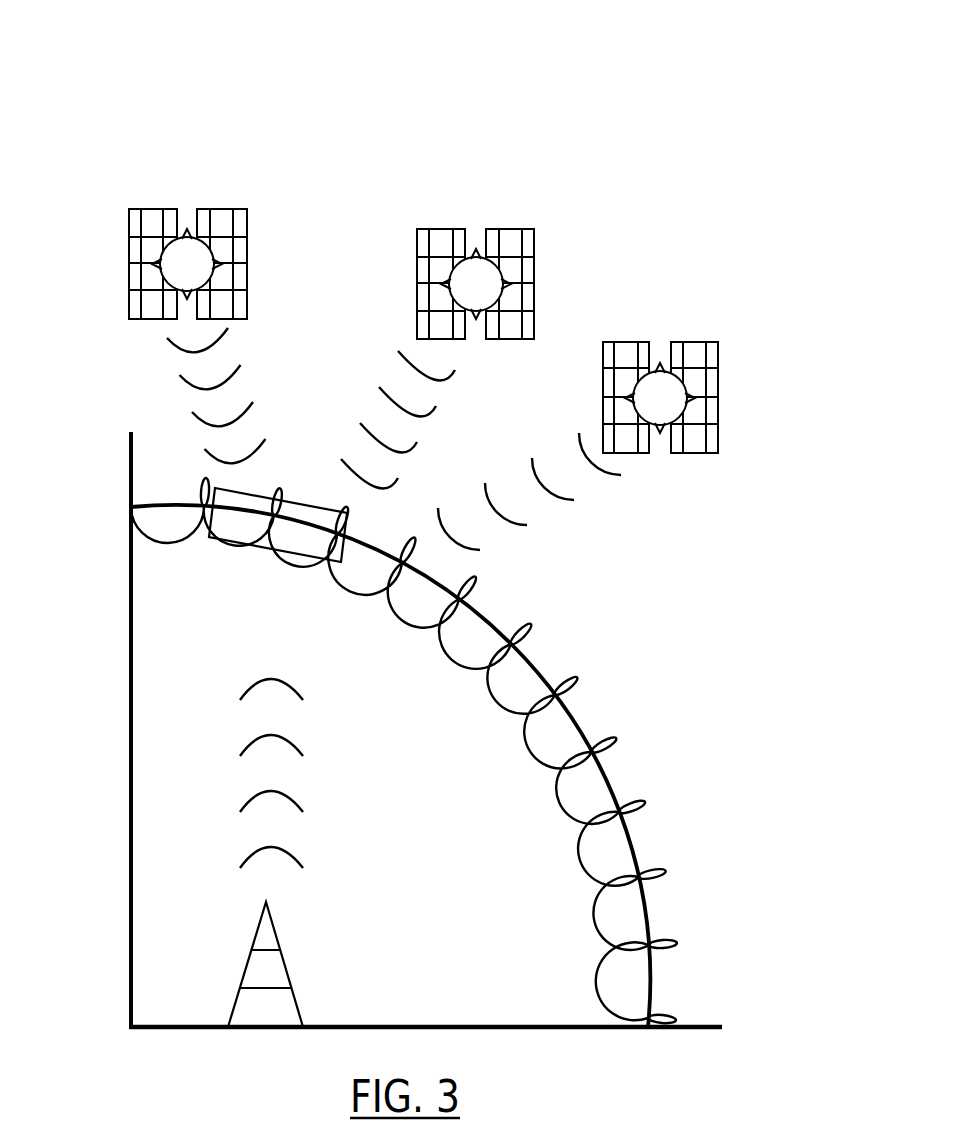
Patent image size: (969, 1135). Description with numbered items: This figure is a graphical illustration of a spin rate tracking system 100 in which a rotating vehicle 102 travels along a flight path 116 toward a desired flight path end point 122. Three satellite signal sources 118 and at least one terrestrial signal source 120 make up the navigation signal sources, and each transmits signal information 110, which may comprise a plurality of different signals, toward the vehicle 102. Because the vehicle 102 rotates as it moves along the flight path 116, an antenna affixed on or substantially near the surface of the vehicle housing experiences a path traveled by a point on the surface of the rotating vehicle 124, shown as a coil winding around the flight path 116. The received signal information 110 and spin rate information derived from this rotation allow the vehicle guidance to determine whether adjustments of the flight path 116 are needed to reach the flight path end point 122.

The spin rate tracking system 100 is at (536, 78).
The vehicle 102 is at (267, 546).
The signal information 110 is at (596, 550).
The flight path 116 is at (628, 842).
The satellite signal sources 118 is at (144, 132).
The terrestrial signal source 120 is at (288, 973).
The flight path end point 122 is at (648, 1018).
The path traveled by a point on the surface of the rotating vehicle 124 is at (603, 748).